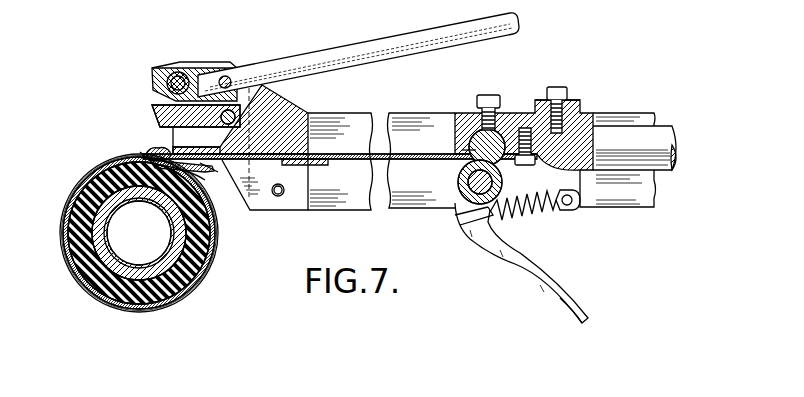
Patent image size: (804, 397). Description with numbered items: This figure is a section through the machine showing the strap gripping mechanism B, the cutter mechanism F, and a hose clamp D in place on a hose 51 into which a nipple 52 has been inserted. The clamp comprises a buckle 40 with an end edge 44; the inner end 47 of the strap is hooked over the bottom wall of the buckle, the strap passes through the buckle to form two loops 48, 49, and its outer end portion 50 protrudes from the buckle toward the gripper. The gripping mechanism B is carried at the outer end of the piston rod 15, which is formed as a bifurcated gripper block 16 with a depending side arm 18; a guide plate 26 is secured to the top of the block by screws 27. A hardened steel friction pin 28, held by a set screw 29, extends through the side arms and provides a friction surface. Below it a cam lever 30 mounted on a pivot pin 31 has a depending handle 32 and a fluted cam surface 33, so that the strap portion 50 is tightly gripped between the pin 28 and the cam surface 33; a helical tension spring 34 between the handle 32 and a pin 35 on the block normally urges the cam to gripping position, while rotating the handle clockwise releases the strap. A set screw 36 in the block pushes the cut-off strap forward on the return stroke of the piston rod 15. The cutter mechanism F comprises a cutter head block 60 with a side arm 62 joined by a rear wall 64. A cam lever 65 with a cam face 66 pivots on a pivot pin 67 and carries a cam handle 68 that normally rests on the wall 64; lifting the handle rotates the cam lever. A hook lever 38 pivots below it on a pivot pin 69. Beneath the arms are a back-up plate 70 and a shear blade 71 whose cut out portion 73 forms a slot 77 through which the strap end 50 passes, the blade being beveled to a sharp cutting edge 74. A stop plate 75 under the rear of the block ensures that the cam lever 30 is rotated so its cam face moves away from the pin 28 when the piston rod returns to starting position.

The piston rod 15 is at (668, 128).
The gripper block 16 is at (513, 118).
The depending side arm 18 is at (462, 168).
The guide plate 26 is at (581, 102).
The screw 27 is at (561, 87).
The friction pin 28 is at (487, 142).
The set screw 29 is at (487, 94).
The cam lever 30 is at (497, 267).
The pivot pin 31 is at (475, 188).
The handle 32 is at (562, 300).
The cam surface 33 is at (462, 150).
The helical tension spring 34 is at (546, 210).
The pin 35 is at (573, 208).
The set screw 36 is at (526, 165).
The hook lever 38 is at (160, 118).
The buckle 40 is at (137, 144).
The end edge 44 is at (158, 151).
The inner end of the strap 47 is at (142, 196).
The loop 48 is at (201, 270).
The loop 49 is at (212, 254).
The outer end portion of the strap 50 is at (416, 161).
The hose 51 is at (70, 260).
The nipple 52 is at (70, 233).
The cutter head block 60 is at (237, 57).
The side arm 62 is at (216, 62).
The wall 64 is at (292, 115).
The cam lever 65 is at (188, 72).
The cam face 66 is at (160, 93).
The pivot pin 67 is at (176, 78).
The cam handle 68 is at (397, 40).
The pivot pin 69 is at (256, 88).
The back-up plate 70 is at (230, 164).
The shear blade 71 is at (196, 180).
The cut out portion 73 is at (190, 166).
The cutting edge 74 is at (162, 213).
The stop plate 75 is at (300, 166).
The slot 77 is at (186, 152).
The strap gripping mechanism B is at (547, 76).
The hose clamp D is at (94, 310).
The cutter mechanism F is at (161, 56).